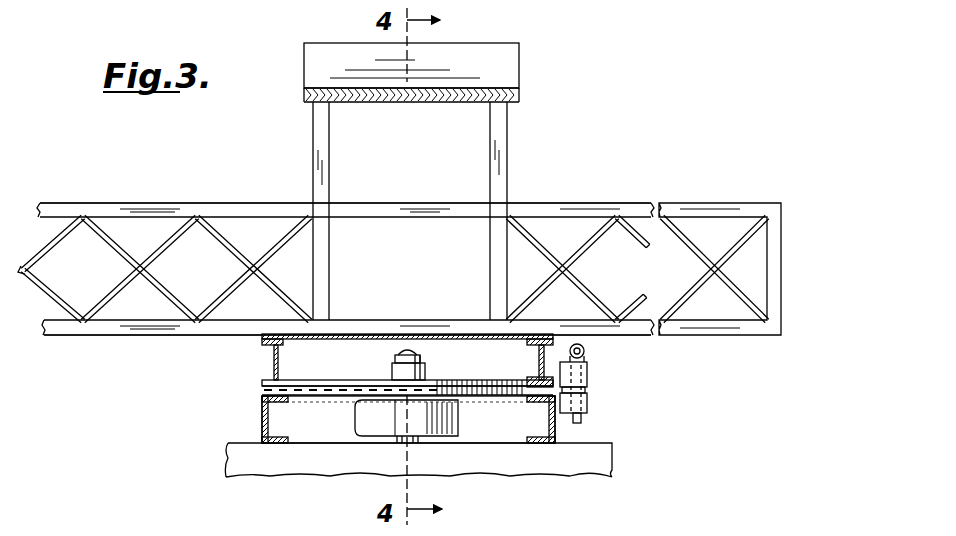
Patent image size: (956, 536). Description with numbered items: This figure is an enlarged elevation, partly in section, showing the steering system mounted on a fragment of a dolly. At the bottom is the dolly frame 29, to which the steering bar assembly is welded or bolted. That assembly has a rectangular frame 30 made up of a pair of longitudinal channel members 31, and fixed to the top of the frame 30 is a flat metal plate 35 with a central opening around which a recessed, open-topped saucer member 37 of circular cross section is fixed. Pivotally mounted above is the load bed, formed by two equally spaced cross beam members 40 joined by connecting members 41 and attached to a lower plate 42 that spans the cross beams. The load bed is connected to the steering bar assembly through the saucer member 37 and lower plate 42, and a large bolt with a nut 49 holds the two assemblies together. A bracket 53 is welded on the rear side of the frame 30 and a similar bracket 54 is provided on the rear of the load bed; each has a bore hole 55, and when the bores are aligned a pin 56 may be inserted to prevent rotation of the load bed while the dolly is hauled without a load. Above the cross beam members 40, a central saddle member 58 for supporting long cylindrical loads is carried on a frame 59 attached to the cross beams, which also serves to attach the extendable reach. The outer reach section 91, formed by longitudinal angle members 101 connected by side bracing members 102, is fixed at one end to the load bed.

The dolly frame 29 is at (590, 464).
The rectangular frame 30 is at (502, 423).
The longitudinal channel members 31 is at (262, 427).
The flat metal plate 35 is at (262, 393).
The saucer member 37 is at (458, 421).
The cross beam members 40 is at (273, 359).
The connecting members 41 is at (329, 361).
The lower plate 42 is at (325, 382).
The nut 49 is at (428, 364).
The bracket 53 is at (590, 407).
The bracket 54 is at (590, 376).
The bore hole 55 is at (590, 398).
The pin 56 is at (590, 352).
The central saddle member 58 is at (460, 52).
The frame 59 is at (502, 163).
The outer reach section 91 is at (123, 204).
The longitudinal angle members 101 is at (192, 207).
The side bracing members 102 is at (52, 290).